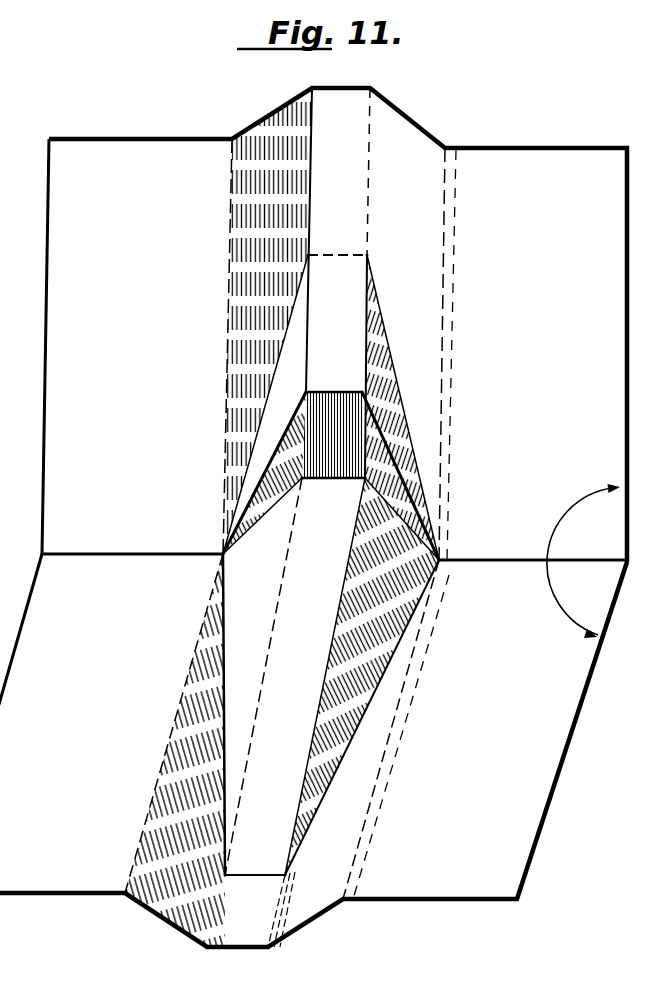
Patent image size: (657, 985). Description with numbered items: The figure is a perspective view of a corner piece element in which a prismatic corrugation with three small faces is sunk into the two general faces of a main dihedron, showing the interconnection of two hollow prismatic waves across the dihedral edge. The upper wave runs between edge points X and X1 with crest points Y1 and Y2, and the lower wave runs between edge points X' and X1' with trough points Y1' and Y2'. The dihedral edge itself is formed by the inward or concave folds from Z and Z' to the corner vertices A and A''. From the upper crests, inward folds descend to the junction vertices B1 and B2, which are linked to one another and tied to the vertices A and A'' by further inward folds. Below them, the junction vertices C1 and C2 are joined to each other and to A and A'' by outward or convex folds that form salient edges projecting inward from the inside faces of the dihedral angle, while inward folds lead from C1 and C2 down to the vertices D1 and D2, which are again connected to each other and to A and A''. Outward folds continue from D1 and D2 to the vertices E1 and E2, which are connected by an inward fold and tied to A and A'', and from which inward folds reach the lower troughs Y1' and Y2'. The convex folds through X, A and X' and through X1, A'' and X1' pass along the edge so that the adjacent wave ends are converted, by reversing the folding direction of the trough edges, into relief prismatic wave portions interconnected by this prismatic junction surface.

The edge point of the upper prismatic wave X is at (223, 128).
The crest point of the upper prismatic wave Y1 is at (309, 74).
The crest point of the upper prismatic wave Y2 is at (371, 74).
The edge point of the upper prismatic wave X1 is at (459, 133).
The junction fold vertex B1 is at (296, 258).
The junction fold vertex B2 is at (381, 258).
The junction fold vertex C1 is at (294, 393).
The junction fold vertex C2 is at (350, 381).
The junction fold vertex D1 is at (315, 496).
The junction fold vertex D2 is at (379, 474).
The corner vertex on the dihedral edge A is at (210, 546).
The corner vertex on the dihedral edge A'' is at (455, 548).
The end point of the dihedral edge Z is at (50, 543).
The end point of the dihedral edge Z' is at (612, 549).
The junction fold vertex E1 is at (236, 889).
The junction fold vertex E2 is at (297, 889).
The edge point of the lower prismatic wave X' is at (116, 909).
The edge point of the lower prismatic wave X1' is at (351, 917).
The trough point of the lower prismatic wave Y1' is at (210, 966).
The trough point of the lower prismatic wave Y2' is at (267, 966).